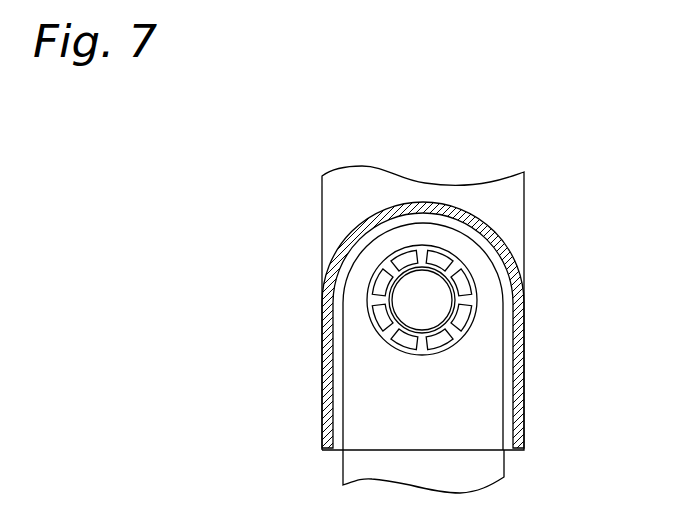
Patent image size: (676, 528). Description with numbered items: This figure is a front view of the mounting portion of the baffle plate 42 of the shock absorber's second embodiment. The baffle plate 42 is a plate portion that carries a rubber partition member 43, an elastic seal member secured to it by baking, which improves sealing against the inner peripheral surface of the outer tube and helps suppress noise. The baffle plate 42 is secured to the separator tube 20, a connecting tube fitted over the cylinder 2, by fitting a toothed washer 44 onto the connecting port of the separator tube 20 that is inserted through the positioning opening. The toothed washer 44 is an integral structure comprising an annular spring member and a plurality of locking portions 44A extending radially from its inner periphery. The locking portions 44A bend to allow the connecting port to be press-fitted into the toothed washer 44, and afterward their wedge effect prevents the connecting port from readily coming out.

The separator tube 20 is at (508, 205).
The partition member 43 is at (517, 270).
The toothed washer 44 is at (412, 300).
The locking portions 44A is at (385, 300).
The baffle plate 42 is at (487, 383).
The cylinder 2 is at (493, 470).